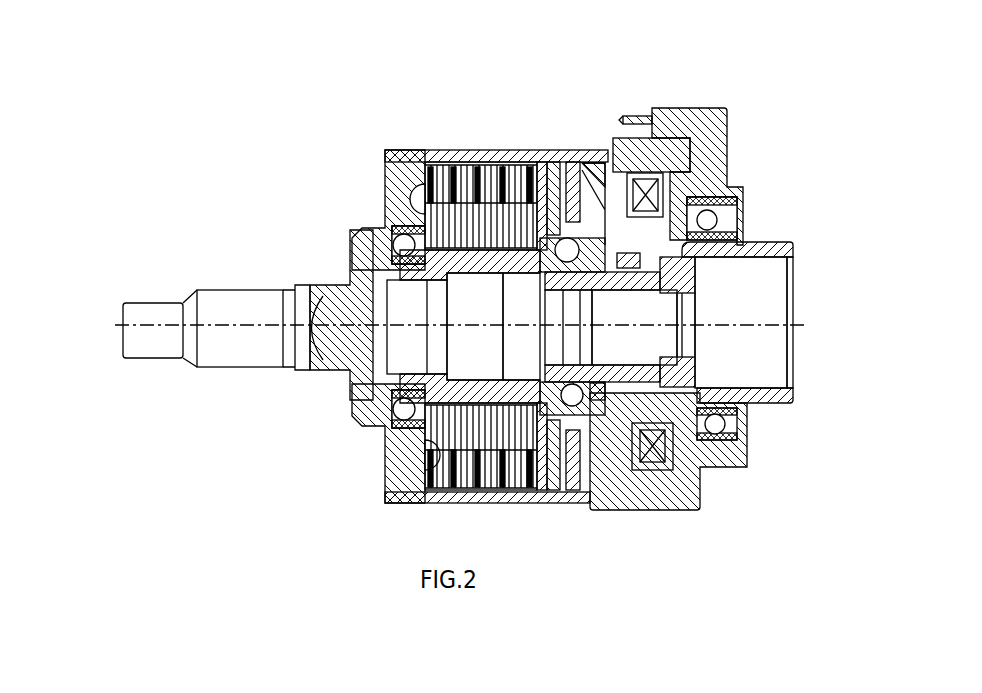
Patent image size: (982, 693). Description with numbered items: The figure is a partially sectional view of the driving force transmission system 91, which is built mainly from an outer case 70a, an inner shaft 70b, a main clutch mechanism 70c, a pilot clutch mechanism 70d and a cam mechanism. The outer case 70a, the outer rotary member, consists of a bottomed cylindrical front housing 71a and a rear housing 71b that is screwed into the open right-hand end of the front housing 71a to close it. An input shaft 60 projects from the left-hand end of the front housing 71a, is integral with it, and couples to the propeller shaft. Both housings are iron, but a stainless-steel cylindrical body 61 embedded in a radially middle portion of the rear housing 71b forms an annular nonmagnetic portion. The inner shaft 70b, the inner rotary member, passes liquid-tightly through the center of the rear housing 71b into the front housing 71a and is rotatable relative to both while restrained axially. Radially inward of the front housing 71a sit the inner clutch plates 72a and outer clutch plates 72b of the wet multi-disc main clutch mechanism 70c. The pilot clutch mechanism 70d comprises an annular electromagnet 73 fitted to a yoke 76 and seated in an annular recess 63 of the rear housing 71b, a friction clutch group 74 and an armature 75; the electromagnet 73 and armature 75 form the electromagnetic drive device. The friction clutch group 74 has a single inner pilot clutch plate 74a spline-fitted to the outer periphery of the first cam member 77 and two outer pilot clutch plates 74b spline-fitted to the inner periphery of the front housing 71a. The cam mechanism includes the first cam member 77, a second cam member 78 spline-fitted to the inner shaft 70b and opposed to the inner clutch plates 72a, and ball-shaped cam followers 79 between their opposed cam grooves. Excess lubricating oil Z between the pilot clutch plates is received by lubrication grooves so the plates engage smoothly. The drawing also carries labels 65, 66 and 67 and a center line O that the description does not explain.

The input shaft 60 is at (156, 305).
The cylindrical body 61 is at (617, 181).
The annular recess 63 is at (641, 236).
The bolt 65 is at (603, 147).
The output member 66 is at (693, 263).
The output shaft bore 67 is at (703, 344).
The outer case 70a is at (430, 141).
The inner shaft 70b is at (460, 262).
The main clutch mechanism 70c is at (509, 142).
The pilot clutch mechanism 70d is at (624, 175).
The front housing 71a is at (390, 152).
The rear housing 71b is at (677, 114).
The inner clutch plates 72a is at (478, 260).
The outer clutch plates 72b is at (455, 153).
The electromagnet 73 is at (697, 262).
The friction clutch group 74 is at (580, 147).
The inner pilot clutch plate 74a is at (595, 237).
The outer pilot clutch plates 74b is at (583, 160).
The armature 75 is at (570, 157).
The yoke 76 is at (745, 461).
The first cam member 77 is at (582, 289).
The second cam member 78 is at (538, 165).
The cam followers 79 is at (542, 338).
The driving force transmission system 91 is at (776, 97).
The rotation axis O is at (824, 321).
The lubricating oil Z is at (585, 503).